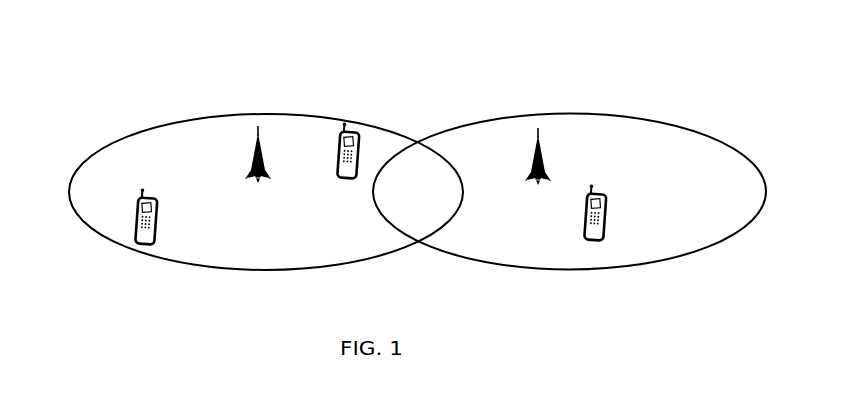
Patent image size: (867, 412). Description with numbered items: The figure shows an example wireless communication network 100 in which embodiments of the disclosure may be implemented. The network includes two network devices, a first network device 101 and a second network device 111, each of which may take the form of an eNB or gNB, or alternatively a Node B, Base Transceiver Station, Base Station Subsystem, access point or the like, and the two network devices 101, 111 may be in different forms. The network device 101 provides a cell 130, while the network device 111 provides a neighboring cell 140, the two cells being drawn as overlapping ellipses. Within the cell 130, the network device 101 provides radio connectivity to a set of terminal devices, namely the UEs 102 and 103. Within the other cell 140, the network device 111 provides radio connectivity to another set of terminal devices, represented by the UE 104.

The wireless communication network 100 is at (217, 40).
The cell 130 is at (113, 143).
The cell 140 is at (664, 123).
The network device 101 is at (258, 188).
The network device 111 is at (545, 137).
The UE 102 is at (354, 133).
The UE 103 is at (163, 200).
The UE 104 is at (603, 193).